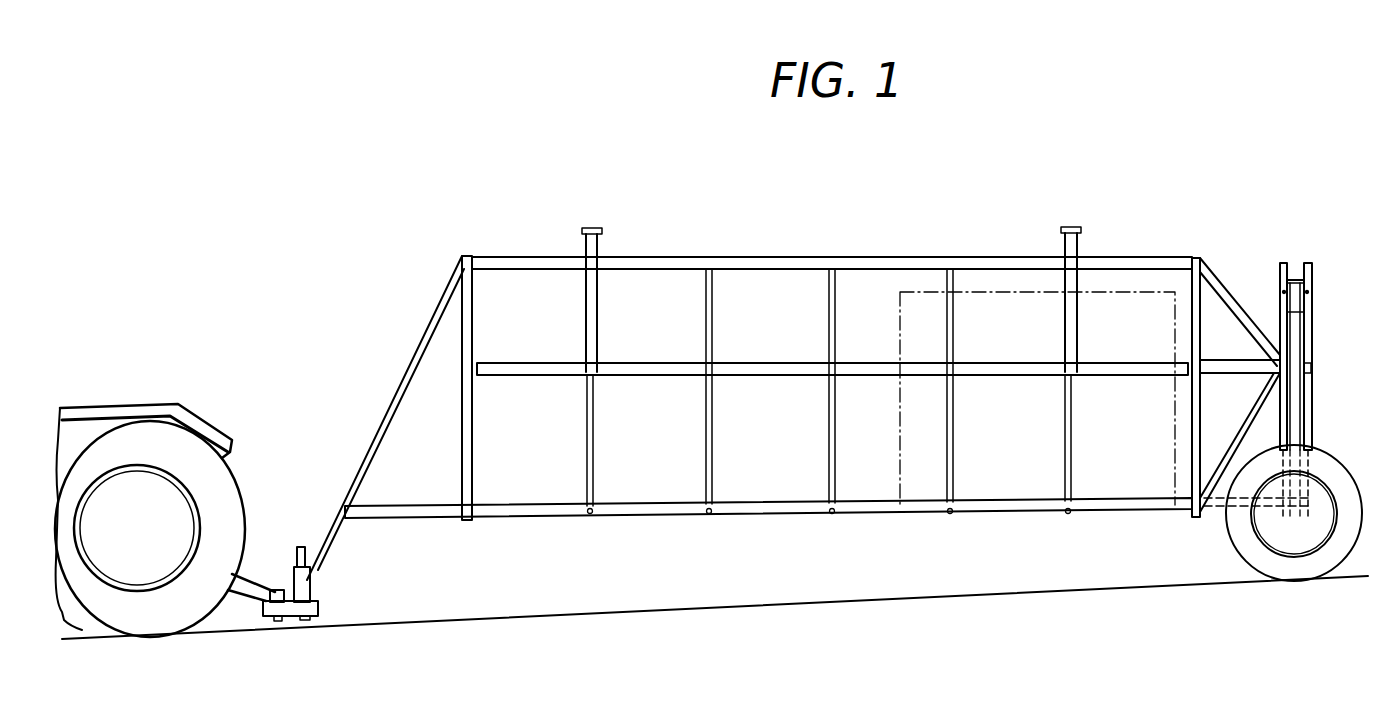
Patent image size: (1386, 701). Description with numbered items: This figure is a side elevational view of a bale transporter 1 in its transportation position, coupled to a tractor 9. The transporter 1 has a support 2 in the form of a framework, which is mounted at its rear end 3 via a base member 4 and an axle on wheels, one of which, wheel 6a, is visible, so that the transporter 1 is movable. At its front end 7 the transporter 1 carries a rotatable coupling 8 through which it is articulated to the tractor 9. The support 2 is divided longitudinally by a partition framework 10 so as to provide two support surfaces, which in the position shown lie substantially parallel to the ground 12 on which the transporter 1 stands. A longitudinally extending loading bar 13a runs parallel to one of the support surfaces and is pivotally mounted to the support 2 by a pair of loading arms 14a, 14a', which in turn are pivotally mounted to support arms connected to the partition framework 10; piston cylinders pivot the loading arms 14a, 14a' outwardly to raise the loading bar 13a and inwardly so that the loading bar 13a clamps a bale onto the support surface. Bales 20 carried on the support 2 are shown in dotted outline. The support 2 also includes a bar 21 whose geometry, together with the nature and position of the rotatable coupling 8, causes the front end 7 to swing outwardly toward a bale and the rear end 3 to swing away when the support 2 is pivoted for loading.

The transporter 1 is at (806, 232).
The support 2 is at (745, 510).
The rear end 3 is at (1197, 294).
The base member 4 is at (1312, 280).
The wheel 6a is at (1245, 548).
The front end 7 is at (462, 433).
The rotatable coupling 8 is at (312, 578).
The tractor 9 is at (128, 430).
The partition framework 10 is at (865, 258).
The ground 12 is at (818, 670).
The loading bar 13a is at (668, 370).
The loading arm 14a is at (629, 284).
The loading arm 14a' is at (1100, 277).
The bales 20 is at (1005, 485).
The bar 21 is at (414, 363).